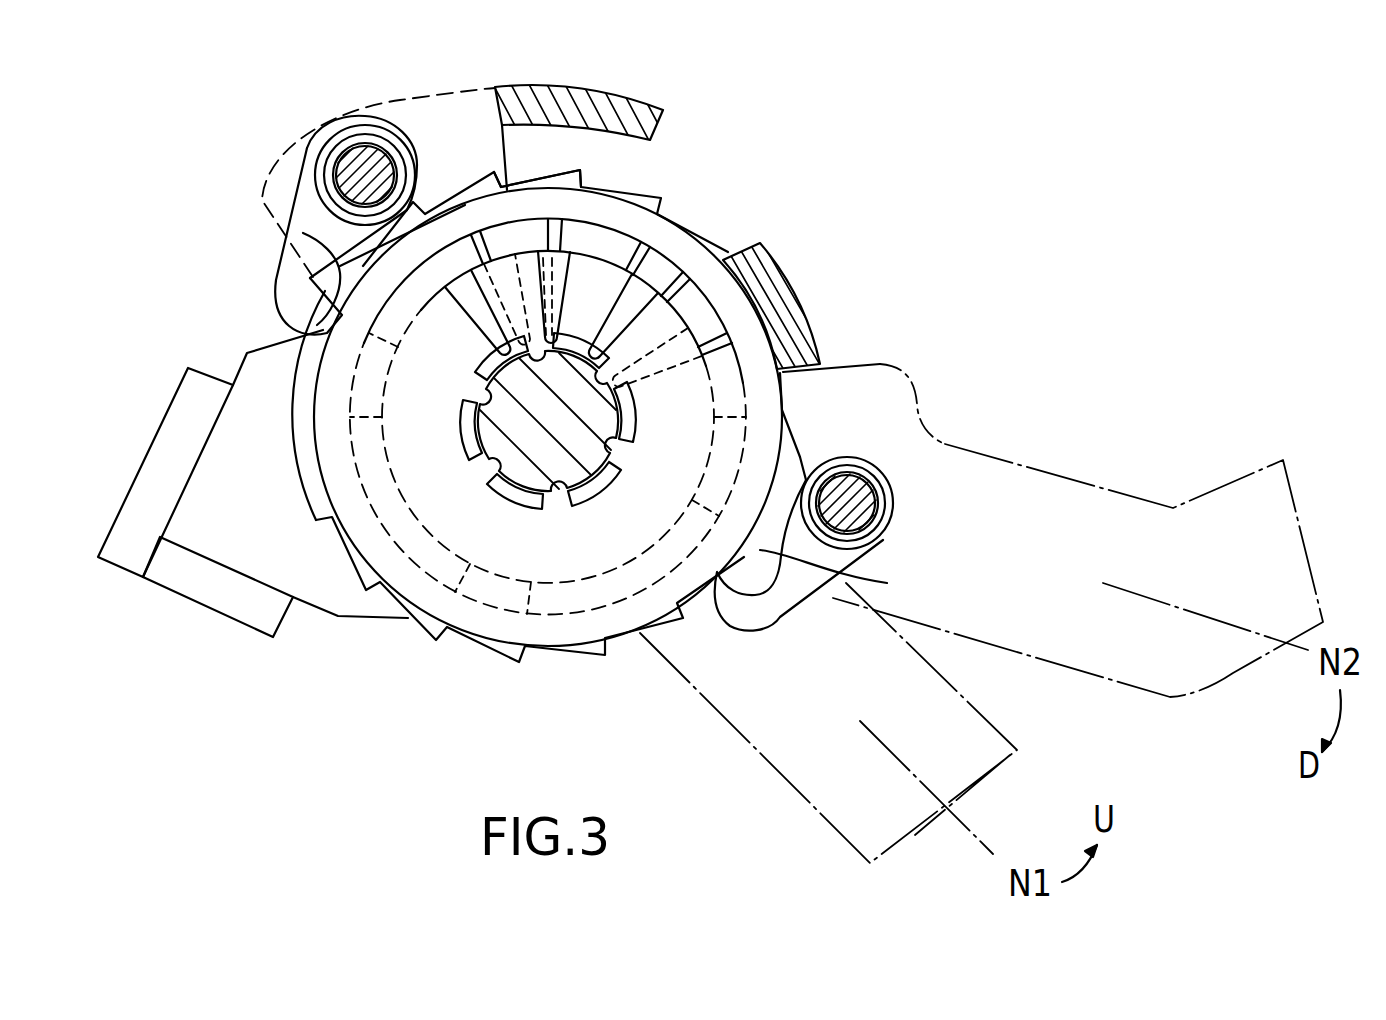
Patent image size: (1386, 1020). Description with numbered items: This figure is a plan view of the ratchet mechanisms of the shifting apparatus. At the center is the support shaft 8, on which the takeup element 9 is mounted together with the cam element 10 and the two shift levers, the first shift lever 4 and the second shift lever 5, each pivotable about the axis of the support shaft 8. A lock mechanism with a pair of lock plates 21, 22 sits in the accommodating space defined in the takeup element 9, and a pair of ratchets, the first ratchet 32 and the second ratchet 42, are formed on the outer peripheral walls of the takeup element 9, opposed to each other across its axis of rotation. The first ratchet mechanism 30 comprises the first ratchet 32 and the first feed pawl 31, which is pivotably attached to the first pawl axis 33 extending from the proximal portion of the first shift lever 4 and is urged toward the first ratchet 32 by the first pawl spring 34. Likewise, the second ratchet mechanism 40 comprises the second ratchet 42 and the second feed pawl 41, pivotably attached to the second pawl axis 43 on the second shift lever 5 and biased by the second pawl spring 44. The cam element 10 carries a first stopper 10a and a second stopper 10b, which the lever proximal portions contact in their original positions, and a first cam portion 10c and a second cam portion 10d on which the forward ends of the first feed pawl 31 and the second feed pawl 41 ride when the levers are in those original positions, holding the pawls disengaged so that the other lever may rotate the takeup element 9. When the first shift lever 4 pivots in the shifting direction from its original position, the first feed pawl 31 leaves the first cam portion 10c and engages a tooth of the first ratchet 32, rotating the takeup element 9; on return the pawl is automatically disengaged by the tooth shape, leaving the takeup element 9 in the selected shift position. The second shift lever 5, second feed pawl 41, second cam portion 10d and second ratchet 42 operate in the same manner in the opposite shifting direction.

The first shift lever 4 is at (812, 805).
The second shift lever 5 is at (1172, 700).
The support shaft 8 is at (547, 450).
The takeup element 9 is at (337, 617).
The cam element 10 is at (557, 632).
The first stopper 10a is at (522, 88).
The second stopper 10b is at (787, 274).
The first cam portion 10c is at (303, 233).
The second cam portion 10d is at (887, 583).
The lock plate 21 is at (640, 290).
The lock plate 22 is at (697, 298).
The first ratchet mechanism 30 is at (290, 190).
The first feed pawl 31 is at (275, 284).
The first ratchet 32 is at (577, 160).
The first pawl axis 33 is at (350, 163).
The first pawl spring 34 is at (382, 140).
The second ratchet mechanism 40 is at (873, 540).
The second feed pawl 41 is at (773, 620).
The second ratchet 42 is at (482, 648).
The second pawl axis 43 is at (858, 497).
The second pawl spring 44 is at (848, 476).